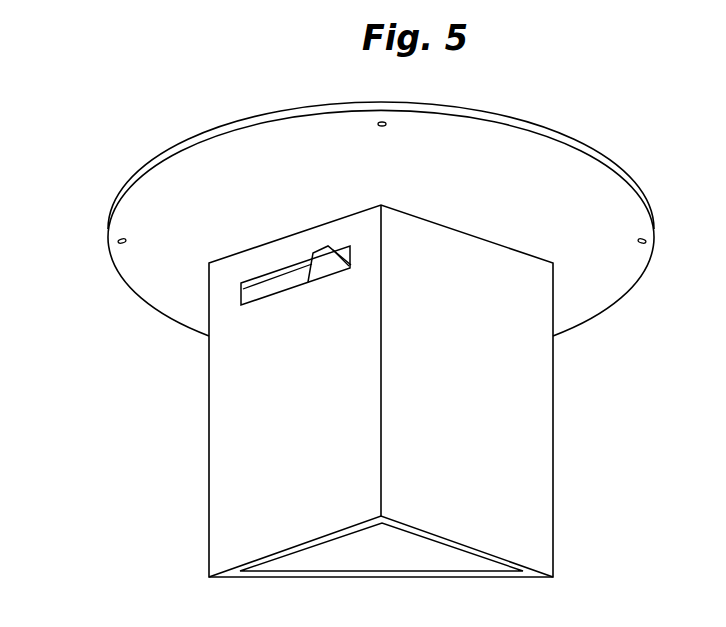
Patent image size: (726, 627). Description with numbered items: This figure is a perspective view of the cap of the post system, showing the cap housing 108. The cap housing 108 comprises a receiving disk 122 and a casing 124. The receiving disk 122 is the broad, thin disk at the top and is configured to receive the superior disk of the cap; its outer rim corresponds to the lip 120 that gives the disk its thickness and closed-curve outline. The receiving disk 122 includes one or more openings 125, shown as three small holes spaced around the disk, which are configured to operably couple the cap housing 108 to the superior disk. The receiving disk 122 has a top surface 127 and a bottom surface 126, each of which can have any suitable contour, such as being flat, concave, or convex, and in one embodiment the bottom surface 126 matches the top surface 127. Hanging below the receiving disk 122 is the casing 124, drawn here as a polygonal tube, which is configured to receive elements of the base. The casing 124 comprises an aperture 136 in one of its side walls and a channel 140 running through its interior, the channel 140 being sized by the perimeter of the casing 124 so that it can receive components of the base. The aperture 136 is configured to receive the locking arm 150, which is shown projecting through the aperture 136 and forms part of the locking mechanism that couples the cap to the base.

The cap housing 108 is at (597, 290).
The lip 120 is at (412, 209).
The receiving disk 122 is at (488, 123).
The casing 124 is at (414, 410).
The openings 125 is at (381, 121).
The bottom surface 126 is at (604, 199).
The top surface 127 is at (598, 153).
The aperture 136 is at (253, 292).
The channel 140 is at (356, 560).
The locking arm 150 is at (318, 270).